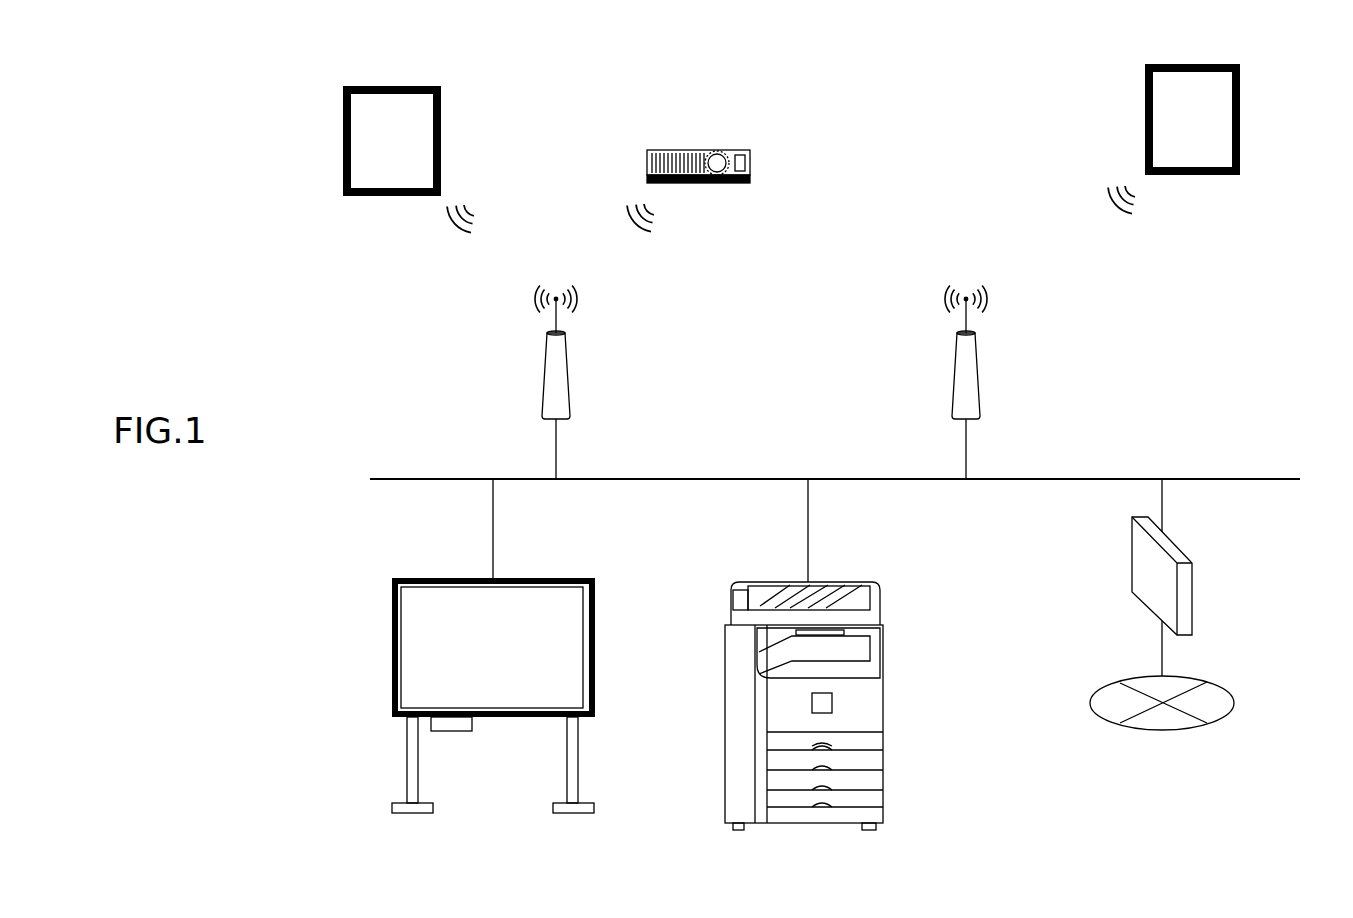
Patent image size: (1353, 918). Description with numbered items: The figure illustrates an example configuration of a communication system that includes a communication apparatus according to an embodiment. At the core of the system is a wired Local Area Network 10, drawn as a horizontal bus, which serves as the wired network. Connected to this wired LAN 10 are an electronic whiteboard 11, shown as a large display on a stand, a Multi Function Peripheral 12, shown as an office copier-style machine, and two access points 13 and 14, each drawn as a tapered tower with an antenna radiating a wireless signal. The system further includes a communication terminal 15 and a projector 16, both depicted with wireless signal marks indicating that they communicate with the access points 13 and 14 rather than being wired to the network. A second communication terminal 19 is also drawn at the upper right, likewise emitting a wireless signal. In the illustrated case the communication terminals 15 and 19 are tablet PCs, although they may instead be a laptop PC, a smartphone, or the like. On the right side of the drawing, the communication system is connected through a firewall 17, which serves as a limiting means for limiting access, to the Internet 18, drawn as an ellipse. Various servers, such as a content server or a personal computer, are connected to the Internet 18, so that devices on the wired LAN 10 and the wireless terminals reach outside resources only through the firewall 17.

The wired Local Area Network 10 is at (1280, 478).
The electronic whiteboard 11 is at (594, 578).
The Multi Function Peripheral 12 is at (862, 582).
The access point 13 is at (568, 362).
The access point 14 is at (978, 352).
The communication terminal 15 is at (436, 87).
The projector 16 is at (748, 152).
The firewall 17 is at (1192, 563).
The Internet 18 is at (1102, 720).
The communication terminal 19 is at (1236, 65).